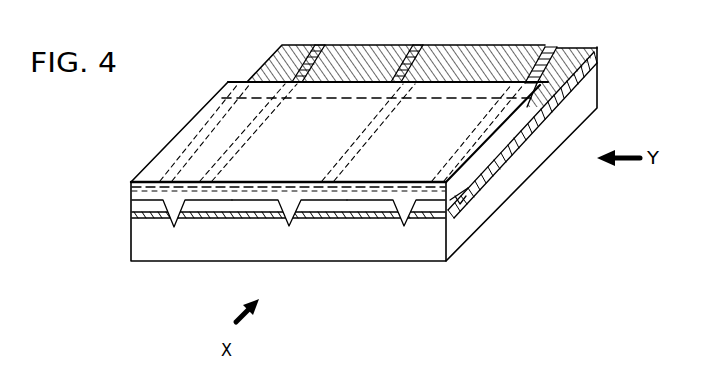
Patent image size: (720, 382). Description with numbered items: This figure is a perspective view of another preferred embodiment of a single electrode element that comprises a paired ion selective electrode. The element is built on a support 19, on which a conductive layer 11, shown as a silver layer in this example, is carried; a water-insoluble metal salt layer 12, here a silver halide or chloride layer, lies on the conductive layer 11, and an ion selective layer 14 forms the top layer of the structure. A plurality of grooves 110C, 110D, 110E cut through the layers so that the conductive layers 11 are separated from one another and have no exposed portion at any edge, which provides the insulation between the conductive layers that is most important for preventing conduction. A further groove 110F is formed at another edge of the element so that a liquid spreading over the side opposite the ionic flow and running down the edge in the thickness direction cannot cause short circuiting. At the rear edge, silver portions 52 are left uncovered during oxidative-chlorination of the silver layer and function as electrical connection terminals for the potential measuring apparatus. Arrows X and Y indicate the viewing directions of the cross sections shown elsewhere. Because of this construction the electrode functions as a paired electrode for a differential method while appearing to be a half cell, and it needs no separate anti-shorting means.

The conductive layer 11 is at (131, 212).
The water-insoluble metal salt layer 12 is at (131, 218).
The ion selective layer 14 is at (131, 184).
The support 19 is at (432, 257).
The electrical connection terminal for potential measuring apparatus 52 is at (270, 56).
The groove 110C is at (170, 228).
The groove 110D is at (291, 229).
The groove 110E is at (397, 214).
The groove 110F is at (497, 176).